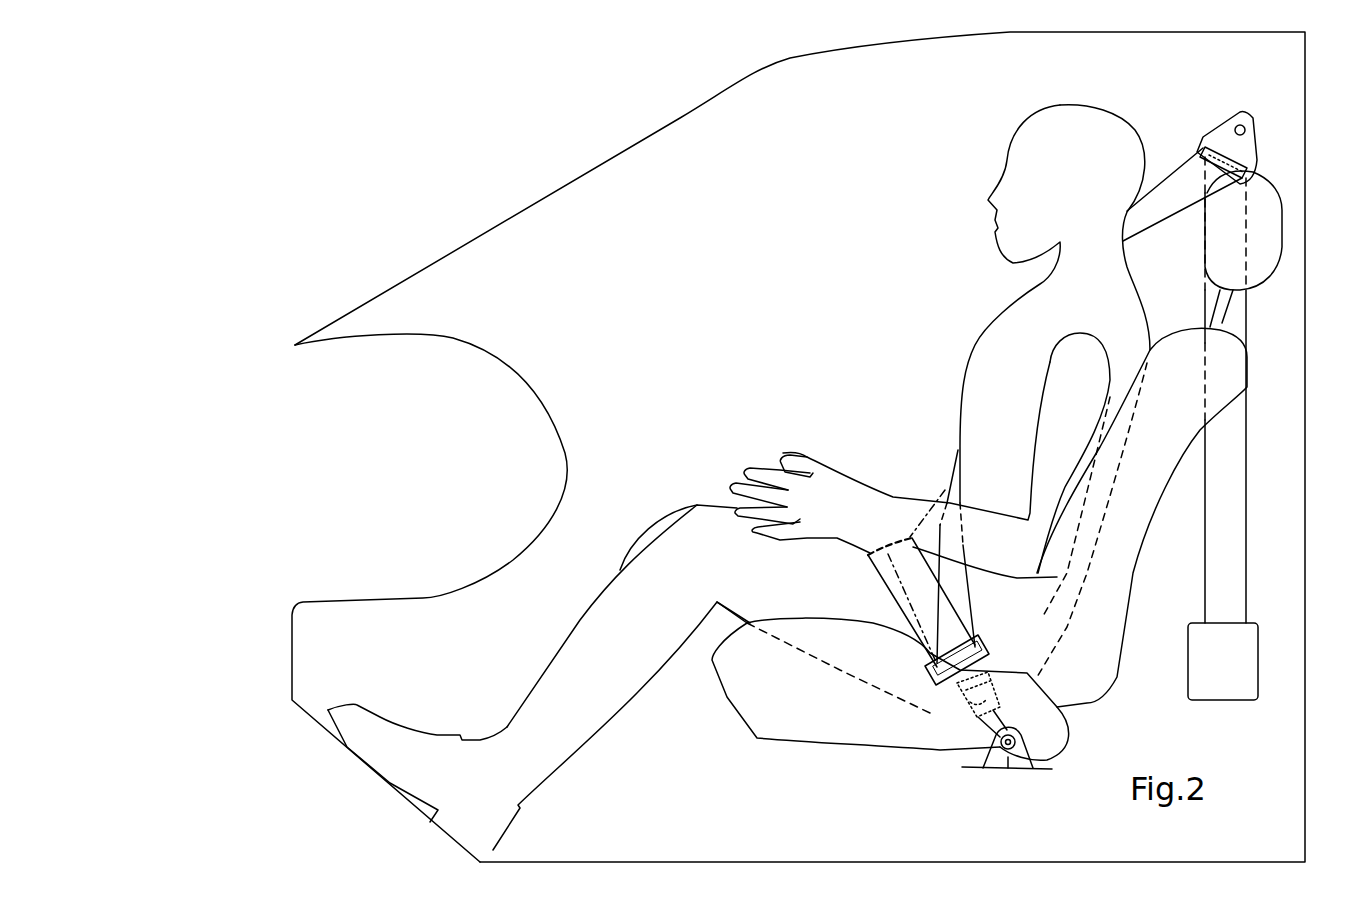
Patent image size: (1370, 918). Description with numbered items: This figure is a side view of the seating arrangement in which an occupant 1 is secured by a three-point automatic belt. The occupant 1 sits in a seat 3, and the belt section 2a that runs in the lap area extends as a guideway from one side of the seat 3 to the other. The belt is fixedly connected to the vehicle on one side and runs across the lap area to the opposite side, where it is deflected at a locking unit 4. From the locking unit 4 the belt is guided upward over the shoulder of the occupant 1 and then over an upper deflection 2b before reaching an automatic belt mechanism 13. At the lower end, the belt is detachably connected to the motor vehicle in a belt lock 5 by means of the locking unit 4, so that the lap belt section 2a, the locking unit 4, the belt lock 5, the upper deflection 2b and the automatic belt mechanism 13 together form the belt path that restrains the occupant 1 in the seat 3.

The occupant 1 is at (1002, 389).
The belt section 2a is at (910, 597).
The upper deflection 2b is at (1257, 157).
The seat 3 is at (760, 693).
The locking unit 4 is at (958, 685).
The belt lock 5 is at (975, 712).
The automatic belt mechanism 13 is at (1237, 653).